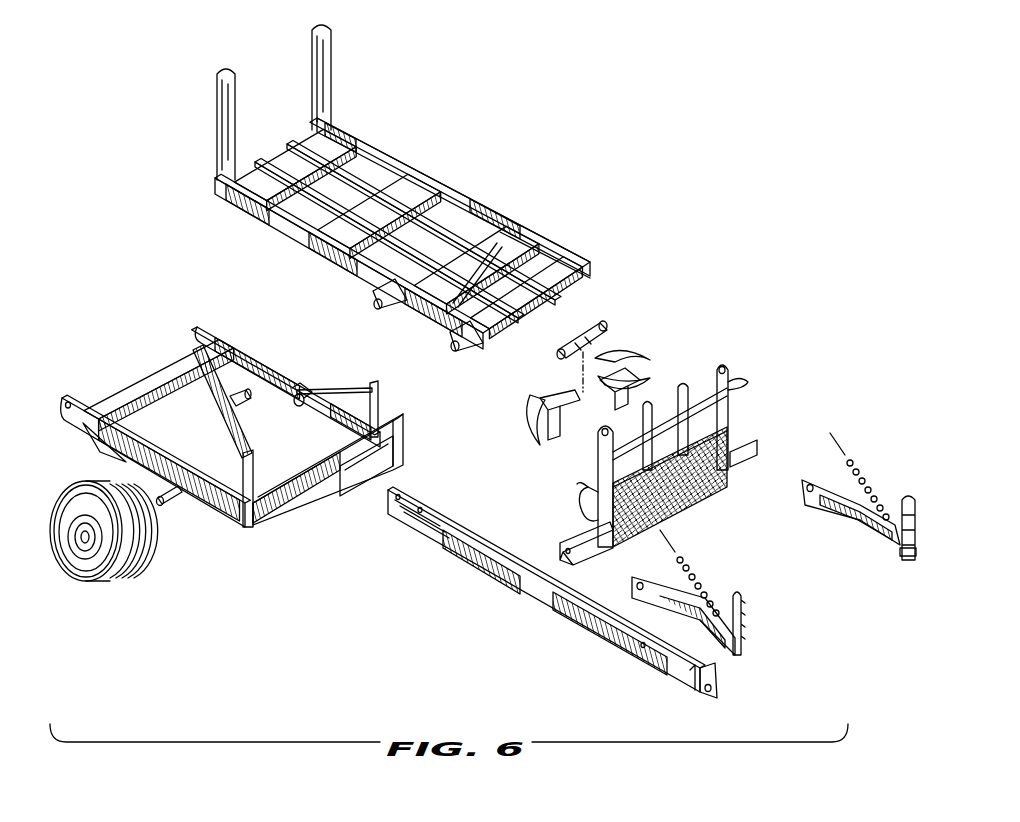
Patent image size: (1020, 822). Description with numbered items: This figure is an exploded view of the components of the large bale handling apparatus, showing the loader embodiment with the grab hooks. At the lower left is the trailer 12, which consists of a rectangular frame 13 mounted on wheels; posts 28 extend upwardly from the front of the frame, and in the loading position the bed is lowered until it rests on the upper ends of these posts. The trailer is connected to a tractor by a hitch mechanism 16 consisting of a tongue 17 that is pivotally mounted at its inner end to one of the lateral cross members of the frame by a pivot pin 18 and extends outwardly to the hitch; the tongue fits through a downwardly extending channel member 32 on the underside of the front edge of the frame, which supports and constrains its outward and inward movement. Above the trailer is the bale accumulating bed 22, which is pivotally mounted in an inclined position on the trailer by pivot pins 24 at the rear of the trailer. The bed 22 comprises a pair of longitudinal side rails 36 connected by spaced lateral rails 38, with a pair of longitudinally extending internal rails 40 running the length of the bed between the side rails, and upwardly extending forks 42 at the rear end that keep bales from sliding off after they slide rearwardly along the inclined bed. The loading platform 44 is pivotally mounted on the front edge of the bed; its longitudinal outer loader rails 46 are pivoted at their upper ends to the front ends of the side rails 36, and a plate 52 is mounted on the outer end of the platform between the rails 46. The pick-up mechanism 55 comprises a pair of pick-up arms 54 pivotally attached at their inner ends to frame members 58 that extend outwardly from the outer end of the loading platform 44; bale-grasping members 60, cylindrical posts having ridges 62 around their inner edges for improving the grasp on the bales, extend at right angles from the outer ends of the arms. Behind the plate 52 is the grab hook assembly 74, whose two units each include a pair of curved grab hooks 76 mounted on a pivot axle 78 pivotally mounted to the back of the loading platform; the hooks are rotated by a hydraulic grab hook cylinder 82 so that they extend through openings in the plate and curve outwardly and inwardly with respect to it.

The trailer 12 is at (228, 543).
The frame 13 is at (213, 500).
The hitch mechanism 16 is at (570, 627).
The tongue 17 is at (483, 563).
The pivot pin 18 is at (297, 387).
The bale accumulating platform or bed 22 is at (498, 193).
The pivot pins 24 is at (60, 407).
The posts 28 is at (280, 490).
The channel member 32 is at (350, 497).
The longitudinal side rails 36 is at (533, 237).
The lateral rails 38 is at (418, 162).
The internal rails 40 is at (366, 167).
The forks 42 is at (312, 47).
The loading platform 44 is at (737, 427).
The outer loader rails 46 is at (737, 397).
The plate 52 is at (697, 503).
The pick-up arms 54 is at (717, 650).
The pick-up mechanism 55 is at (878, 480).
The frame members 58 is at (743, 470).
The bale-grasping members 60 is at (743, 607).
The ridges 62 is at (900, 553).
The grab hook assembly 74 is at (652, 350).
The grab hooks 76 is at (617, 353).
The pivot axle 78 is at (630, 380).
The hydraulic grab hook cylinder 82 is at (602, 317).